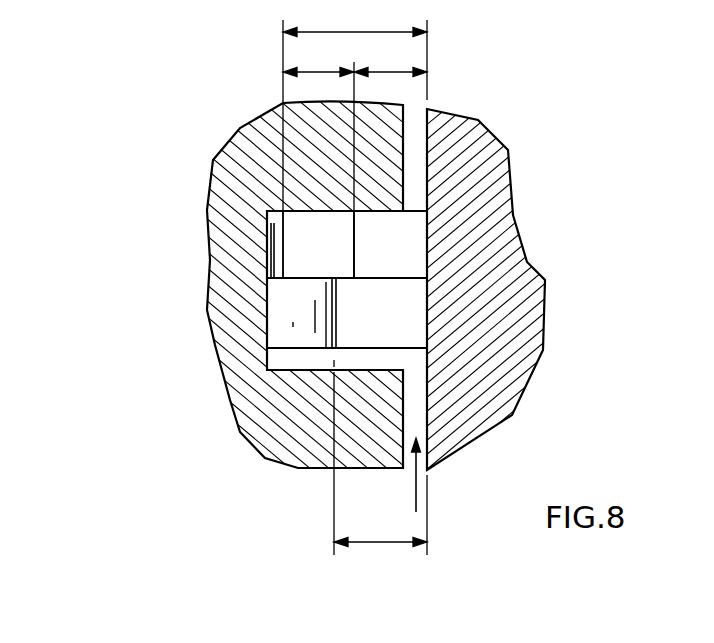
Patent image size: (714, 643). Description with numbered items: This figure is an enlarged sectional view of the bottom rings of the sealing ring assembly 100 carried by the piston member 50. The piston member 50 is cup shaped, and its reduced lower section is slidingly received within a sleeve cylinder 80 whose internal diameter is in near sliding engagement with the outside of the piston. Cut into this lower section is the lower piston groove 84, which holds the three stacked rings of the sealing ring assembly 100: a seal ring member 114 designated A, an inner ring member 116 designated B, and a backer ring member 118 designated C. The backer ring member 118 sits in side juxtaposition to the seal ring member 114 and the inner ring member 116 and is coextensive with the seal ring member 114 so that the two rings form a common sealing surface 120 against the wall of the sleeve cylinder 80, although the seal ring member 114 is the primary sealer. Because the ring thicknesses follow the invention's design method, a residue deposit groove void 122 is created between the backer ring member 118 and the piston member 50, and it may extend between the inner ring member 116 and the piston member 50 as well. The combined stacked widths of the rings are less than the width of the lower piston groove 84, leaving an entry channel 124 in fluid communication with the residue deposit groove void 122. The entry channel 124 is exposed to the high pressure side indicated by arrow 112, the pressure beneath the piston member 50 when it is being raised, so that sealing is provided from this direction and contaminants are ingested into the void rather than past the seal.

The piston member 50 is at (240, 167).
The sleeve cylinder 80 is at (510, 170).
The lower piston groove 84 is at (263, 282).
The sealing ring assembly 100 is at (366, 280).
The arrow indicating high pressure side 112 is at (418, 492).
The seal ring member 114 is at (402, 230).
The inner ring member 116 is at (325, 262).
The backer ring member 118 is at (383, 335).
The common sealing surface 120 is at (428, 253).
The residue deposit groove void 122 is at (310, 315).
The entry channel 124 is at (310, 362).